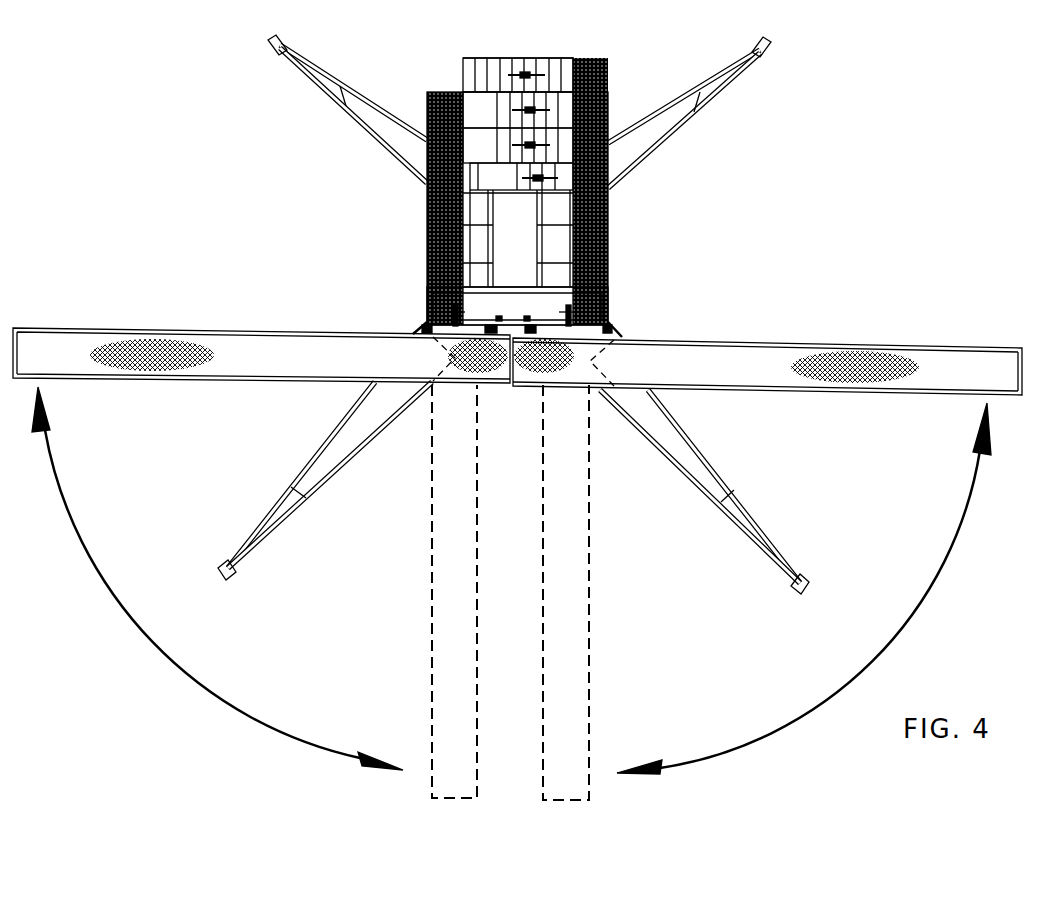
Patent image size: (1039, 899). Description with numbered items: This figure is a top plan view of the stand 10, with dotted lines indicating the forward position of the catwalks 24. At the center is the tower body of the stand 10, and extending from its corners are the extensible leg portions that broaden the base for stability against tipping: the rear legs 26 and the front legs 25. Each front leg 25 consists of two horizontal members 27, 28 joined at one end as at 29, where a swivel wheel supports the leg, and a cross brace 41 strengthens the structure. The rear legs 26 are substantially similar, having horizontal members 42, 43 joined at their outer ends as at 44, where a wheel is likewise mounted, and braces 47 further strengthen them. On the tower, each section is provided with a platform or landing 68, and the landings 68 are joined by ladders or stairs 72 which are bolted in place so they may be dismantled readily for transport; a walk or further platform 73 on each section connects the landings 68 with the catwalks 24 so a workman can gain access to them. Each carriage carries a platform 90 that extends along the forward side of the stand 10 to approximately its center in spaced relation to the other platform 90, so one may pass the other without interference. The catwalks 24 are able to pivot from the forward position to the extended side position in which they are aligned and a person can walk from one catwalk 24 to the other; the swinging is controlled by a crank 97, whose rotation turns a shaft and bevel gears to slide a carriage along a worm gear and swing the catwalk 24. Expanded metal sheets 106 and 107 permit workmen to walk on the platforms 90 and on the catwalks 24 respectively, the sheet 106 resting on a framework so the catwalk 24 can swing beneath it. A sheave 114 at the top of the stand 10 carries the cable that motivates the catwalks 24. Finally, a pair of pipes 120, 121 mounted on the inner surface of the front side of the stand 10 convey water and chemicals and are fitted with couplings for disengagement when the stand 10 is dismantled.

The stand 10 is at (496, 185).
The catwalk 24 is at (517, 343).
The extensible leg portion 25 is at (513, 488).
The extensible leg portion 26 is at (517, 111).
The horizontal member 27 is at (372, 437).
The horizontal member 28 is at (350, 401).
The joined end portion 29 is at (236, 572).
The cross brace 41 is at (304, 495).
The horizontal member 42 is at (405, 167).
The horizontal member 43 is at (380, 100).
The joined outer end 44 is at (278, 47).
The brace 47 is at (341, 98).
The platform or landing 68 is at (428, 110).
The ladder or stairs 72 is at (518, 58).
The walk or further platform 73 is at (428, 222).
The platform 90 is at (529, 400).
The crank 97 is at (415, 331).
The expanded metal sheet 106 is at (511, 356).
The expanded metal sheet 107 is at (166, 364).
The sheave 114 is at (512, 310).
The pipe 120 is at (499, 316).
The pipe 121 is at (527, 316).